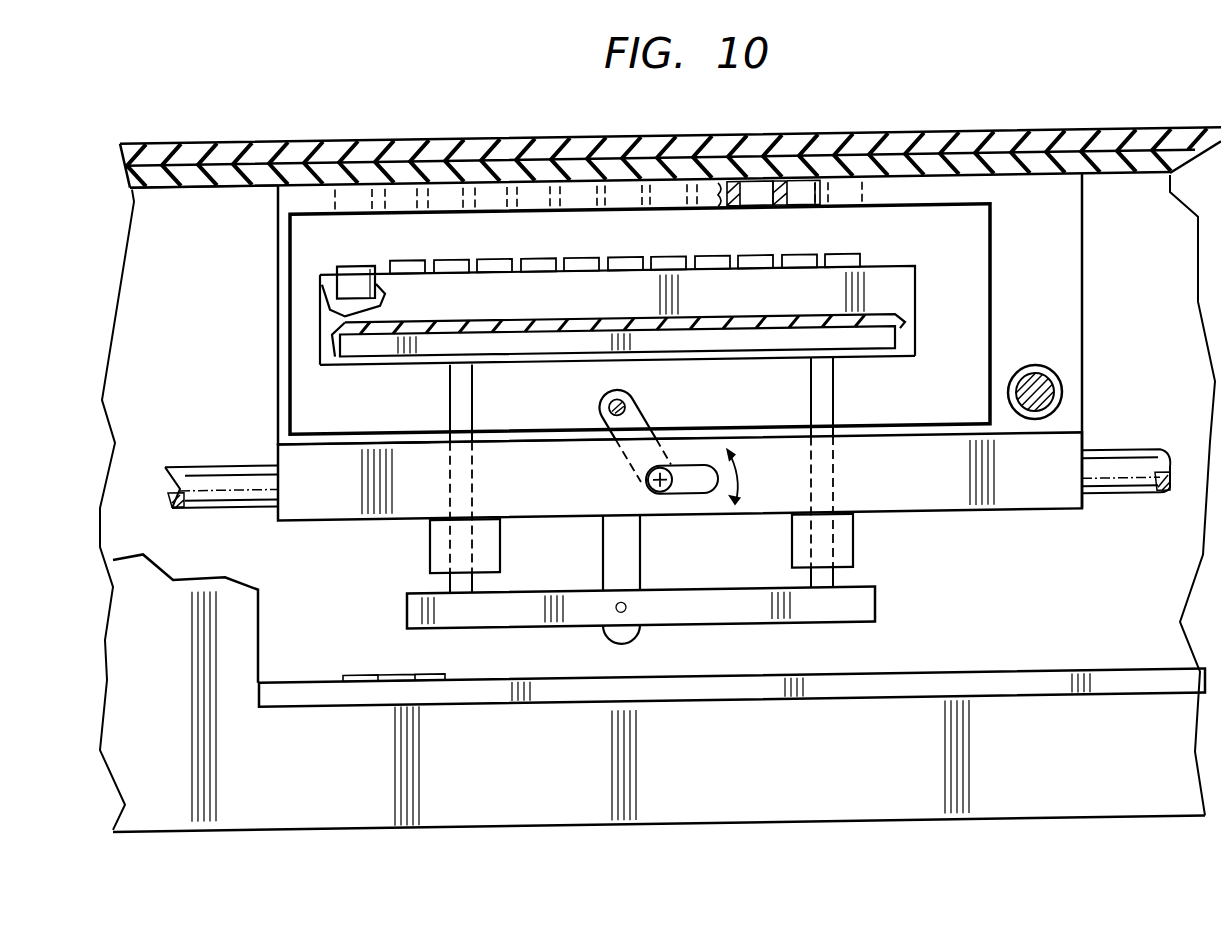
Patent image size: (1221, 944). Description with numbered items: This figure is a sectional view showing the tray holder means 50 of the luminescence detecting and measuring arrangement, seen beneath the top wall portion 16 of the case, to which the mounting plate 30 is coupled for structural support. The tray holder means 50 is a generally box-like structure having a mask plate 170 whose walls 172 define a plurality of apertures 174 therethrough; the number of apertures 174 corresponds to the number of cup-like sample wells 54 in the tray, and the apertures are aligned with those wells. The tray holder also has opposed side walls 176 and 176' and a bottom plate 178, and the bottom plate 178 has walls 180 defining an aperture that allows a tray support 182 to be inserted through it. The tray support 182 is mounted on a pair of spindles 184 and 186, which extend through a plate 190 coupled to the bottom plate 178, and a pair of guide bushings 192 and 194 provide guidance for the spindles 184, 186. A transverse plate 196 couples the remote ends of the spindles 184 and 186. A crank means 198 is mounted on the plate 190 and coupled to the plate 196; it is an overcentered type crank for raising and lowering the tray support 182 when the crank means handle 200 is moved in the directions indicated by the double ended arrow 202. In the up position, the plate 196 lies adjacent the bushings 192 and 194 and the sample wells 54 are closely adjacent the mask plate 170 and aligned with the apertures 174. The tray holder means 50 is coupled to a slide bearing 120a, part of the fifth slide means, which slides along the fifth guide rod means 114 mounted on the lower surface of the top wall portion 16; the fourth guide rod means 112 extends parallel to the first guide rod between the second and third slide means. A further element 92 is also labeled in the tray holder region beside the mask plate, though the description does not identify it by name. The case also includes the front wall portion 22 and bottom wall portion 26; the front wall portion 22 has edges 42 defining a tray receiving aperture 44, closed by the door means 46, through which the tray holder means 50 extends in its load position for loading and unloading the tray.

The top wall portion 16 is at (272, 139).
The mounting plate 30 is at (240, 181).
The tray holder means 50 is at (252, 298).
The side wall 176' is at (240, 315).
The mask plate 170 is at (887, 212).
The apertures 174 is at (736, 185).
The walls 172 is at (795, 186).
The cup-like sample wells 54 is at (805, 259).
The carriage bar 92 is at (917, 298).
The tray support 182 is at (548, 360).
The side wall 176 is at (1148, 494).
The slide bearing 120a is at (1052, 376).
The fifth guide rod means 114 is at (1062, 398).
The plate 190 is at (303, 517).
The walls 180 is at (348, 432).
The bottom plate 178 is at (396, 422).
The spindle 186 is at (473, 393).
The spindle 184 is at (834, 382).
The guide bushing 192 is at (500, 541).
The guide bushing 194 is at (855, 536).
The transverse plate 196 is at (790, 631).
The crank means 198 is at (652, 538).
The crank means handle 200 is at (696, 466).
The double ended arrow 202 is at (738, 472).
The fourth guide rod means 112 is at (1098, 504).
The edges 42 is at (260, 606).
The tray receiving aperture 44 is at (370, 626).
The door means 46 is at (305, 696).
The front wall portion 22 is at (296, 779).
The bottom wall portion 26 is at (420, 826).